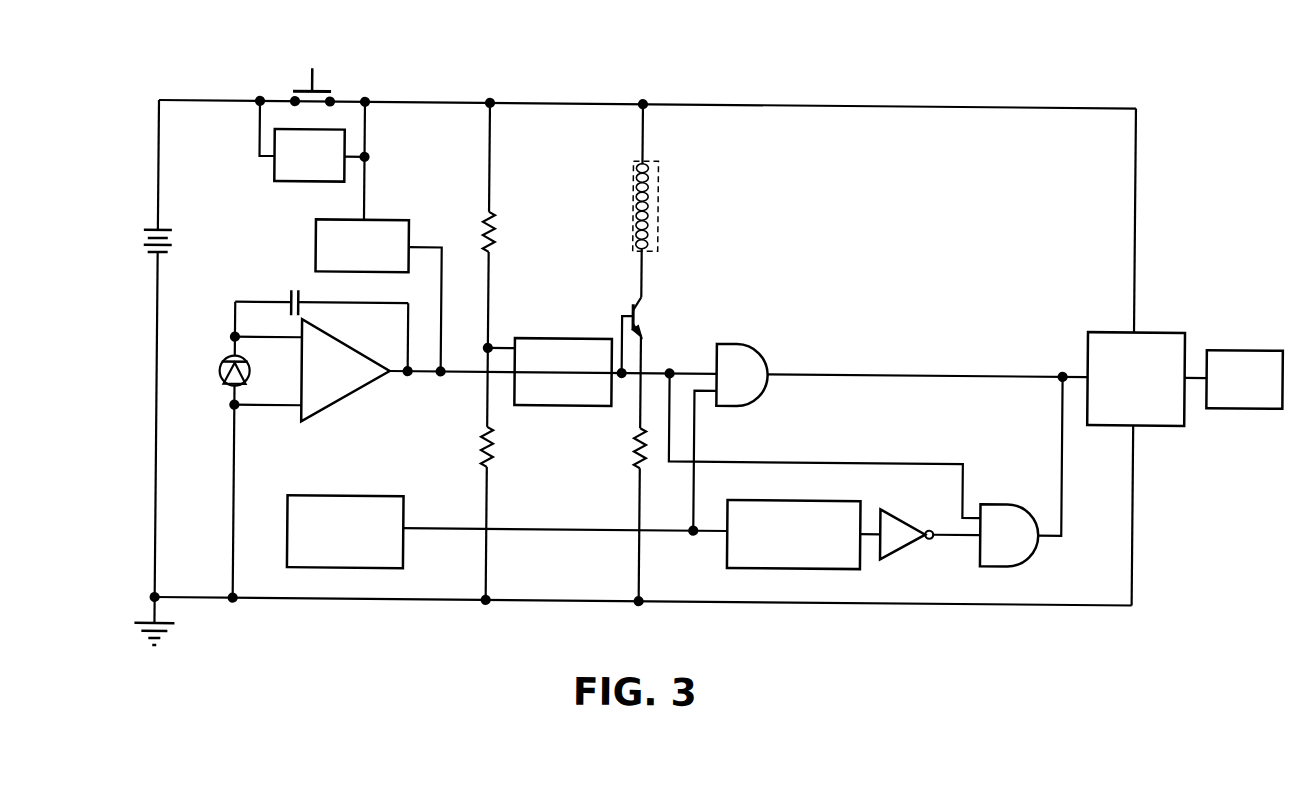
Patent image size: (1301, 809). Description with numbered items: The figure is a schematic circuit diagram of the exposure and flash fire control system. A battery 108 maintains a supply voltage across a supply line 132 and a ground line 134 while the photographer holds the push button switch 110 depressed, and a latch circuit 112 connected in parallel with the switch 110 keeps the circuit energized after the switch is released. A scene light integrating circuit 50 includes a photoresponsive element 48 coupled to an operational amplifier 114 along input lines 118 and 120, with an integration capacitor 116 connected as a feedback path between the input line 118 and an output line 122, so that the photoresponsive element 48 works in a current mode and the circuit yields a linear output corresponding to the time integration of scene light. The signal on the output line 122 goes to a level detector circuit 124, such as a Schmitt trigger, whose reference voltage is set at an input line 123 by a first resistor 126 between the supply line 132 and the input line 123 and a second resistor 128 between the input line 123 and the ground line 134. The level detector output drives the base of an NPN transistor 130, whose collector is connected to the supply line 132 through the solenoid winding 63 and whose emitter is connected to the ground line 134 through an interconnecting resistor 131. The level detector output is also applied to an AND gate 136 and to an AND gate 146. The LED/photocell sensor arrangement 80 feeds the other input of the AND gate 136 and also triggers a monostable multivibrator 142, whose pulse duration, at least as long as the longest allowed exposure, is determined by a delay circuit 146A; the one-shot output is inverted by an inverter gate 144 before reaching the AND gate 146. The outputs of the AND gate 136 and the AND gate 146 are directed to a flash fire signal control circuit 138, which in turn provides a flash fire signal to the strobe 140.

The battery 108 is at (145, 233).
The switch S1 110 is at (333, 93).
The latch circuit 112 is at (302, 181).
The delay circuit 146A is at (388, 218).
The light integrating circuit 50 is at (236, 296).
The integration capacitor 116 is at (293, 289).
The input line 118 is at (284, 336).
The photoresponsive element 48 is at (226, 381).
The input line 120 is at (258, 405).
The amplifier stage 114 is at (345, 391).
The output line 122 is at (426, 376).
The first resistor 126 is at (497, 232).
The second resistor 128 is at (497, 446).
The input line 123 is at (505, 344).
The level detector circuit 124 is at (580, 335).
The solenoid winding 63 is at (661, 213).
The NPN transistor 130 is at (637, 312).
The interconnecting resistor 131 is at (637, 450).
The supply line 132 is at (575, 98).
The ground line 134 is at (340, 598).
The AND gate 136 is at (754, 341).
The LED/photocell sensor arrangement 80 is at (346, 494).
The monostable multivibrator 142 is at (821, 564).
The inverter gate 144 is at (906, 546).
The AND gate 146 is at (1002, 497).
The flash fire signal control circuit 138 is at (1117, 324).
The strobe 140 is at (1247, 341).